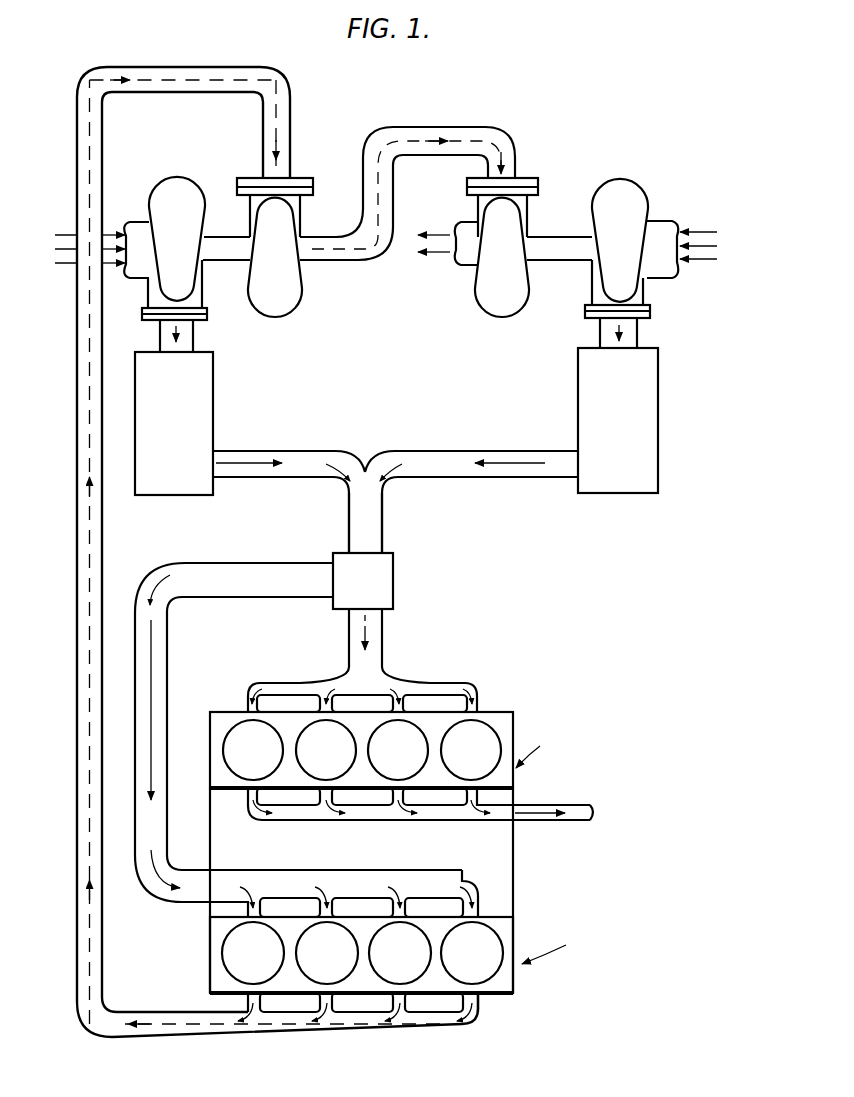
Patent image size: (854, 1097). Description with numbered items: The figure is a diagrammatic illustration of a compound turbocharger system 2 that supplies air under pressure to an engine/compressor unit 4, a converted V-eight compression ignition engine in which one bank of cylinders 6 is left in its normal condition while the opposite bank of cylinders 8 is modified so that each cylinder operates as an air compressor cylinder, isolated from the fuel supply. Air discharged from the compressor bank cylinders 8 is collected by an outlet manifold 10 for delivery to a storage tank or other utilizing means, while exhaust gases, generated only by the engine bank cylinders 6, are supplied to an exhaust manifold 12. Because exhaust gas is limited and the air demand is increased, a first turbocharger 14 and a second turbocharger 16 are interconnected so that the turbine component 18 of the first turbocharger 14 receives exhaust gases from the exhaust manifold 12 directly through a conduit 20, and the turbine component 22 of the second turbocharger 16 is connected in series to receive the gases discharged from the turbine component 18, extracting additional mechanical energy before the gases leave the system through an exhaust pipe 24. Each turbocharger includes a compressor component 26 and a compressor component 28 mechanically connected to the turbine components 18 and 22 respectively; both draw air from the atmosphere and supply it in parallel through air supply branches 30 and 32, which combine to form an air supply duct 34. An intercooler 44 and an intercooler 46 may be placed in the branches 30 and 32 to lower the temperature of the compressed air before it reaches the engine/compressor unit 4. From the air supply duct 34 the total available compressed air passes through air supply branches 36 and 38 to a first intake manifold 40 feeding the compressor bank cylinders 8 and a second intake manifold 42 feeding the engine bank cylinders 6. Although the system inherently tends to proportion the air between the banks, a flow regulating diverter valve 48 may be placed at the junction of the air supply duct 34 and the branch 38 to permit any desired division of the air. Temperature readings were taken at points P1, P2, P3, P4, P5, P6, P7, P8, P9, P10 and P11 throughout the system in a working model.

The compound turbocharger system 2 is at (562, 142).
The engine/compressor unit 4 is at (516, 722).
The engine bank cylinders 6 is at (500, 995).
The compressor bank cylinders 8 is at (500, 712).
The outlet manifold 10 is at (433, 819).
The exhaust manifold 12 is at (358, 1028).
The first turbocharger 14 is at (220, 178).
The second turbocharger 16 is at (568, 216).
The turbine component 18 is at (298, 300).
The conduit 20 is at (77, 443).
The turbine component 22 is at (515, 303).
The exhaust pipe 24 is at (463, 264).
The compressor component 26 is at (203, 290).
The compressor component 28 is at (646, 298).
The air supply branch 30 is at (303, 450).
The air supply branch 32 is at (458, 451).
The air supply duct 34 is at (382, 515).
The air supply branch 36 is at (383, 628).
The air supply branch 38 is at (165, 685).
The first intake manifold 40 is at (303, 682).
The second intake manifold 42 is at (252, 870).
The intercooler 44 is at (176, 485).
The intercooler 46 is at (626, 495).
The flow regulating diverter valve 48 is at (335, 553).
The measurement point P1 is at (672, 222).
The measurement point P2 is at (145, 272).
The measurement point P3 is at (638, 330).
The measurement point P4 is at (195, 333).
The measurement point P5 is at (552, 478).
The measurement point P6 is at (253, 509).
The measurement point P7 is at (387, 671).
The measurement point P8 is at (305, 880).
The measurement point P9 is at (278, 1030).
The measurement point P10 is at (497, 145).
The measurement point P11 is at (461, 227).